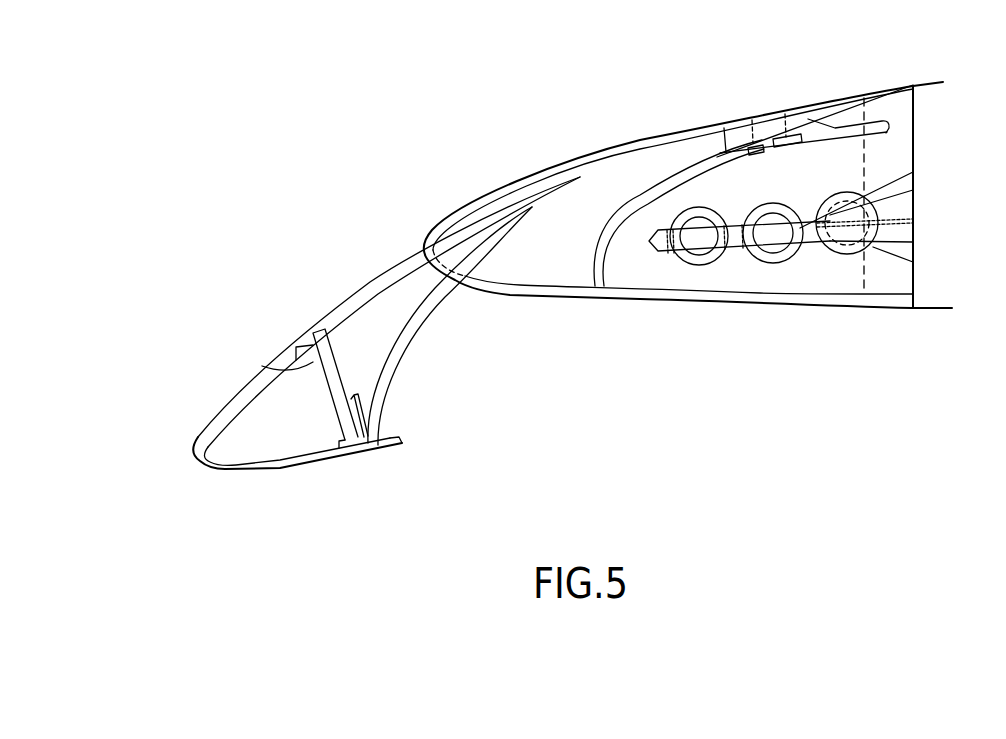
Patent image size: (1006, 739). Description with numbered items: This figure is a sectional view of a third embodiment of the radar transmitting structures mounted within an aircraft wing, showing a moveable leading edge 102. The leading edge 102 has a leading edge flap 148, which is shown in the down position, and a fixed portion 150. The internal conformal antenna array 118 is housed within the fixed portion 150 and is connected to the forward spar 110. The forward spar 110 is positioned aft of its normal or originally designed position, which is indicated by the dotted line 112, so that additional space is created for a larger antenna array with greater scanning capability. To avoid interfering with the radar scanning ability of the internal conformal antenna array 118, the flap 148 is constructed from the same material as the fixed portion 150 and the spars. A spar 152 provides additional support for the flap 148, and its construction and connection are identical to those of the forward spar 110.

The leading edge 102 is at (550, 162).
The forward spar 110 is at (917, 243).
The dotted line 112 is at (863, 280).
The internal conformal antenna array 118 is at (736, 222).
The leading edge flap 148 is at (271, 452).
The fixed portion 150 is at (640, 278).
The spar 152 is at (262, 366).